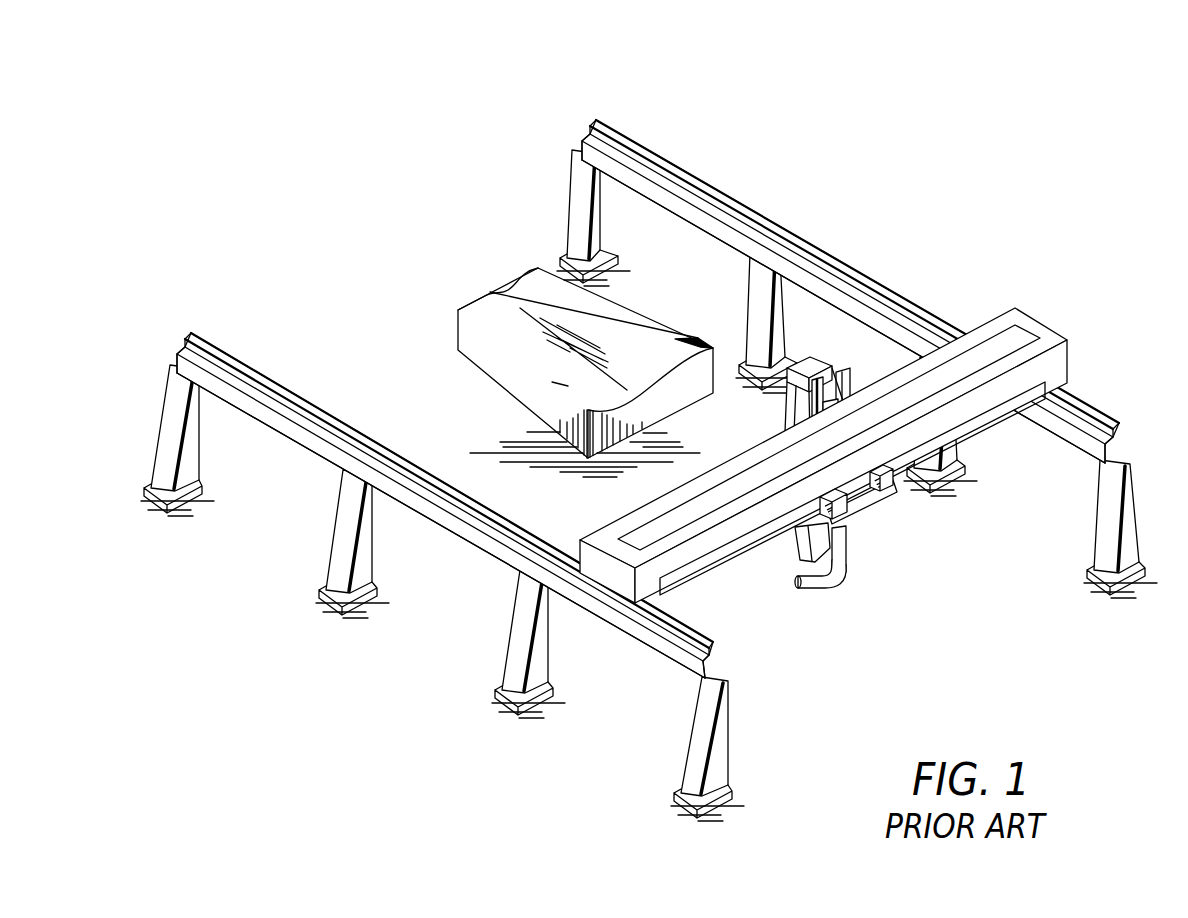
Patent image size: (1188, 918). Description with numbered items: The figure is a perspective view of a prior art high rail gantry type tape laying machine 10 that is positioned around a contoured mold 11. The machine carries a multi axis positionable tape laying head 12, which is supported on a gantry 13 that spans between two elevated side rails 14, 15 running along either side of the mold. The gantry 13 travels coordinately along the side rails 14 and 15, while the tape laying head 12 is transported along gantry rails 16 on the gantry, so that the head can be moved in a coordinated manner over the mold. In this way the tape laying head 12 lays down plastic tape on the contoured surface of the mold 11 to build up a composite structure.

The tape laying machine 10 is at (658, 435).
The contoured mold 11 is at (644, 369).
The tape laying head 12 is at (836, 392).
The gantry 13 is at (1084, 328).
The side rail 14 is at (1093, 413).
The side rail 15 is at (686, 623).
The gantry rails 16 is at (740, 556).